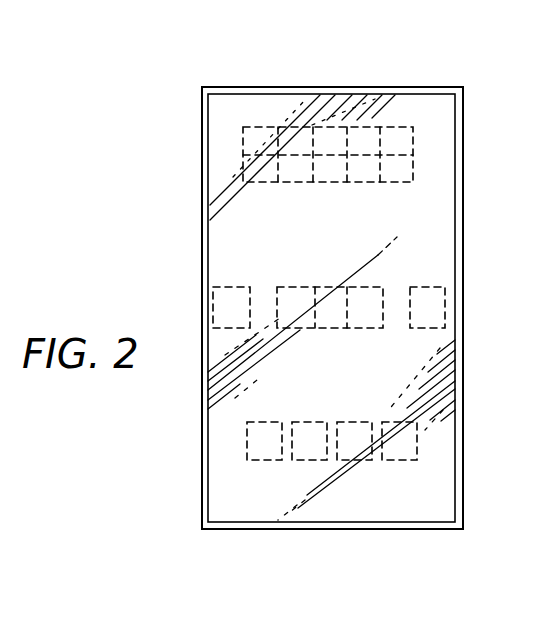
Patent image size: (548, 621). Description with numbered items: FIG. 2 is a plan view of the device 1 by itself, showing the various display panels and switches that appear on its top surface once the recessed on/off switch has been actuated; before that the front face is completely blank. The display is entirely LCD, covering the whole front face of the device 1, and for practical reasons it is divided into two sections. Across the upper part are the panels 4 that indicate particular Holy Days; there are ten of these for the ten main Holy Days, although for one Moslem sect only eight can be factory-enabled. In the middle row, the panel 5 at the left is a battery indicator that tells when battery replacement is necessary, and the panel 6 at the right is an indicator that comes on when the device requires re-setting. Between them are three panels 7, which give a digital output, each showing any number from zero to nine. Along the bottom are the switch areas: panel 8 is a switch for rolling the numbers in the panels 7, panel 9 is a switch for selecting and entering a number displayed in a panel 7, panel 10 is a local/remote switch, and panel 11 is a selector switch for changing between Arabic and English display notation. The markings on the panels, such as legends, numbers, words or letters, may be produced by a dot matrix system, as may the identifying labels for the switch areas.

The device 1 is at (432, 103).
The Holy Day panels 4 is at (272, 122).
The battery indicator panel 5 is at (222, 300).
The re-setting indicator panel 6 is at (430, 307).
The digital output panels 7 is at (312, 288).
The number rolling switch panel 8 is at (262, 454).
The select/enter switch panel 9 is at (300, 456).
The local/remote switch panel 10 is at (343, 452).
The Arabic/English selector switch panel 11 is at (400, 454).